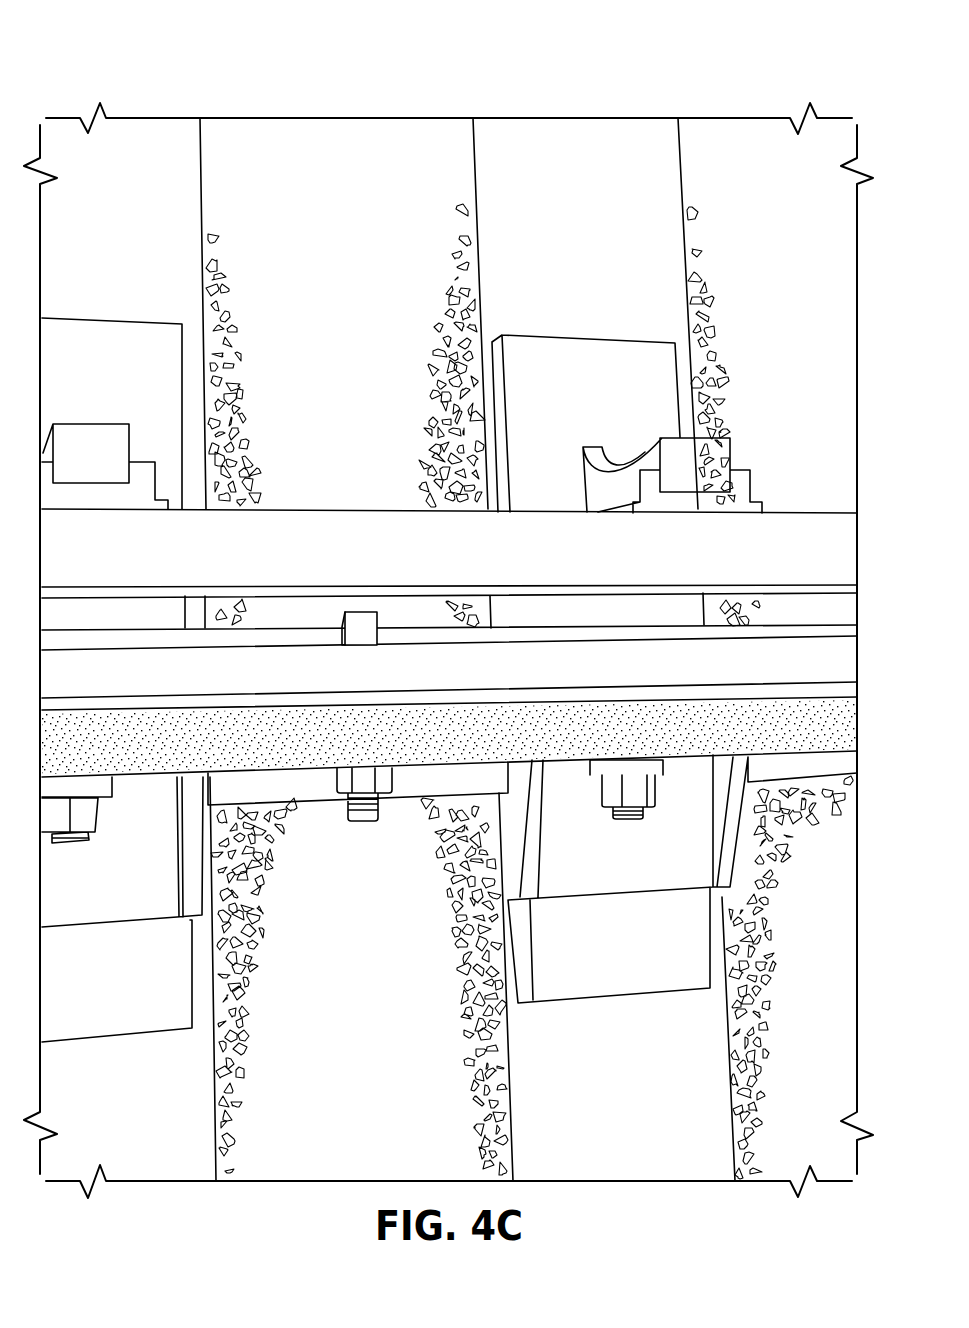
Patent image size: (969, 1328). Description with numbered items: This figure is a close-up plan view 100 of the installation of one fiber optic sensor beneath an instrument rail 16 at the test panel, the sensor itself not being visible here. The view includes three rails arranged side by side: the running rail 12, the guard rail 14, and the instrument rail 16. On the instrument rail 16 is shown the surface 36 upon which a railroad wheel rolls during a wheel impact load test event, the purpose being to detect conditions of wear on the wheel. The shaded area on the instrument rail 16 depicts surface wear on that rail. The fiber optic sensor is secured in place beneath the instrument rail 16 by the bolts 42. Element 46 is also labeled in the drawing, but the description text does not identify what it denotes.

The close-up plan view 100 is at (209, 72).
The guard rail 14 is at (299, 563).
The running rail 12 is at (284, 685).
The instrument rail 16 is at (220, 756).
The surface 36 is at (148, 778).
The bolts 42 is at (355, 823).
The right bracket plate assembly 46 is at (564, 750).